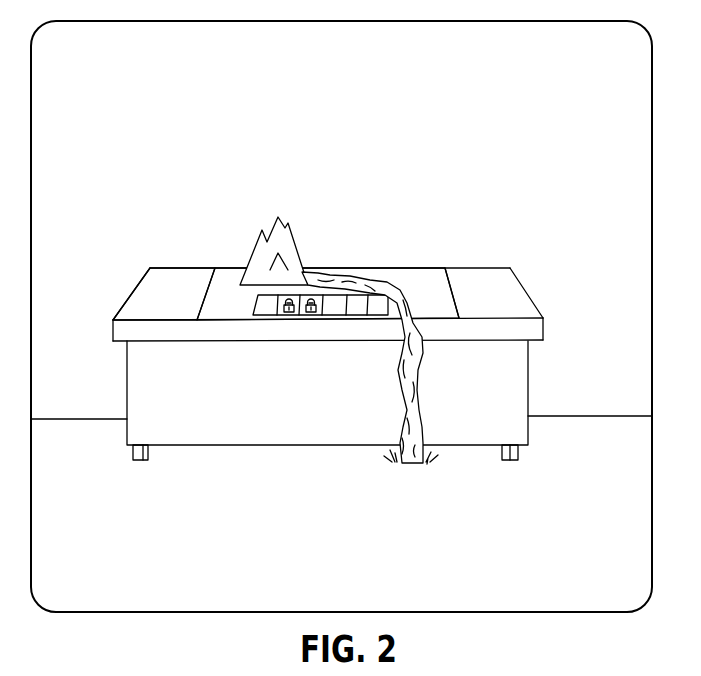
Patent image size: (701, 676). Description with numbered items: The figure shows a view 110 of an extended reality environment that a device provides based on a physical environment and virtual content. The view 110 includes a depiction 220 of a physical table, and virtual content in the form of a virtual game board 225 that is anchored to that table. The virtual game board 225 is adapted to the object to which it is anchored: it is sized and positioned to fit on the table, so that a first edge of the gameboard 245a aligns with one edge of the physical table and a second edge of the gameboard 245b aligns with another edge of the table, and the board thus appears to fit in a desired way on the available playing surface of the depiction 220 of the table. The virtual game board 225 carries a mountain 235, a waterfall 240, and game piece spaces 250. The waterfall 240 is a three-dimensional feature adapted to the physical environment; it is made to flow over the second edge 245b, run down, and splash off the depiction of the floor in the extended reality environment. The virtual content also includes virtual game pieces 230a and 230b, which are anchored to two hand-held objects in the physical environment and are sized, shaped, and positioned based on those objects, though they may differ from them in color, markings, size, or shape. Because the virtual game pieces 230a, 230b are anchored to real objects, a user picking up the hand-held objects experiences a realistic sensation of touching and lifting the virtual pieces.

The view 110 is at (102, 55).
The depiction of the table 220 is at (153, 268).
The virtual game board 225 is at (225, 268).
The virtual game piece 230a is at (288, 314).
The virtual game piece 230b is at (312, 314).
The mountain 235 is at (289, 222).
The waterfall 240 is at (368, 272).
The first edge of the gameboard 245a is at (435, 268).
The second edge of the gameboard 245b is at (440, 320).
The game piece spaces 250 is at (340, 316).